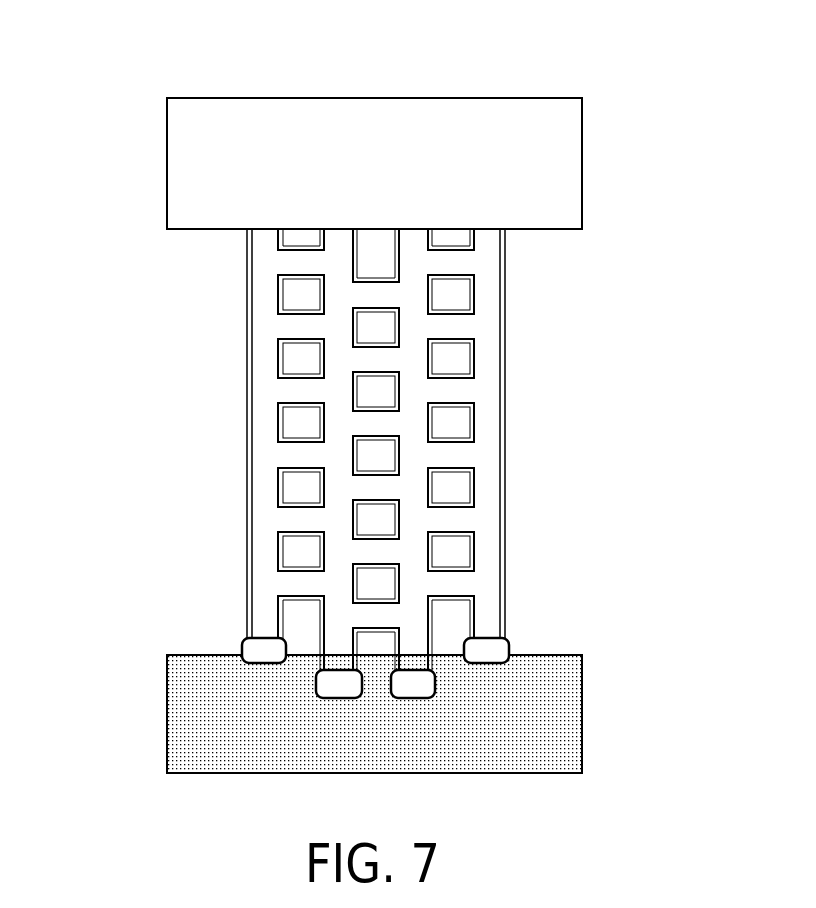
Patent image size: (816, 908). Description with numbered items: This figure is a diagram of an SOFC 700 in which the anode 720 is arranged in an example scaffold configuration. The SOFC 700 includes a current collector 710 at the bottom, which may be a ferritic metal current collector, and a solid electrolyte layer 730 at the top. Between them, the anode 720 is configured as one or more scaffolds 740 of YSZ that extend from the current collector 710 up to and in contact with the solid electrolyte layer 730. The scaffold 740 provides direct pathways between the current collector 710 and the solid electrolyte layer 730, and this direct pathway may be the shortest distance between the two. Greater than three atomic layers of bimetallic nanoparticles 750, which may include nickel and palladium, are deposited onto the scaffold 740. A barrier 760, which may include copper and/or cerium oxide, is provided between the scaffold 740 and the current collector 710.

The SOFC 700 is at (109, 73).
The current collector 710 is at (582, 713).
The anode 720 is at (127, 230).
The solid electrolyte layer 730 is at (167, 138).
The scaffold 740 is at (536, 446).
The bimetallic nanoparticles 750 is at (505, 312).
The barrier 760 is at (248, 647).